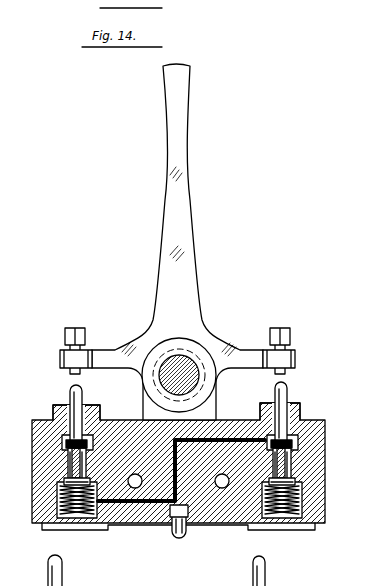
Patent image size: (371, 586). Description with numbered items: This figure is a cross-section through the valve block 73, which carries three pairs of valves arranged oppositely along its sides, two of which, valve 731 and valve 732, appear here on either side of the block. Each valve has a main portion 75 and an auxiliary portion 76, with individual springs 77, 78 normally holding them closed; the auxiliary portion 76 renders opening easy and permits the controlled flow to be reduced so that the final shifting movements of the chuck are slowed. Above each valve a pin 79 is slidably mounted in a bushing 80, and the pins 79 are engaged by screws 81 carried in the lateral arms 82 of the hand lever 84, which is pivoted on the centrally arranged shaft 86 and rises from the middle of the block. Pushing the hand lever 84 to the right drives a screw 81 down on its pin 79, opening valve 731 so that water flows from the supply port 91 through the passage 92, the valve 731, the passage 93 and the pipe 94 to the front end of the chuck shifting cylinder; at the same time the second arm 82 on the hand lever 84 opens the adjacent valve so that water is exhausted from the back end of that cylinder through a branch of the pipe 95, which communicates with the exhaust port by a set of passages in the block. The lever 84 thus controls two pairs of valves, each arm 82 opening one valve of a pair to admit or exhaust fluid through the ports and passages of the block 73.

The valve block 73 is at (72, 459).
The main portion 75 is at (66, 485).
The auxiliary portion 76 is at (283, 462).
The spring 77 is at (34, 499).
The spring 78 is at (79, 512).
The pin 79 is at (75, 393).
The bushing 80 is at (96, 411).
The screw 81 is at (81, 330).
The lateral arm 82 is at (237, 338).
The hand lever 84 is at (188, 211).
The shaft 86 is at (179, 362).
The supply port 91 is at (133, 503).
The passage 92 is at (238, 506).
The passage 93 is at (231, 437).
The pipe 94 is at (179, 538).
The pipe 95 is at (220, 494).
The valve 731 is at (293, 438).
The valve 732 is at (63, 441).